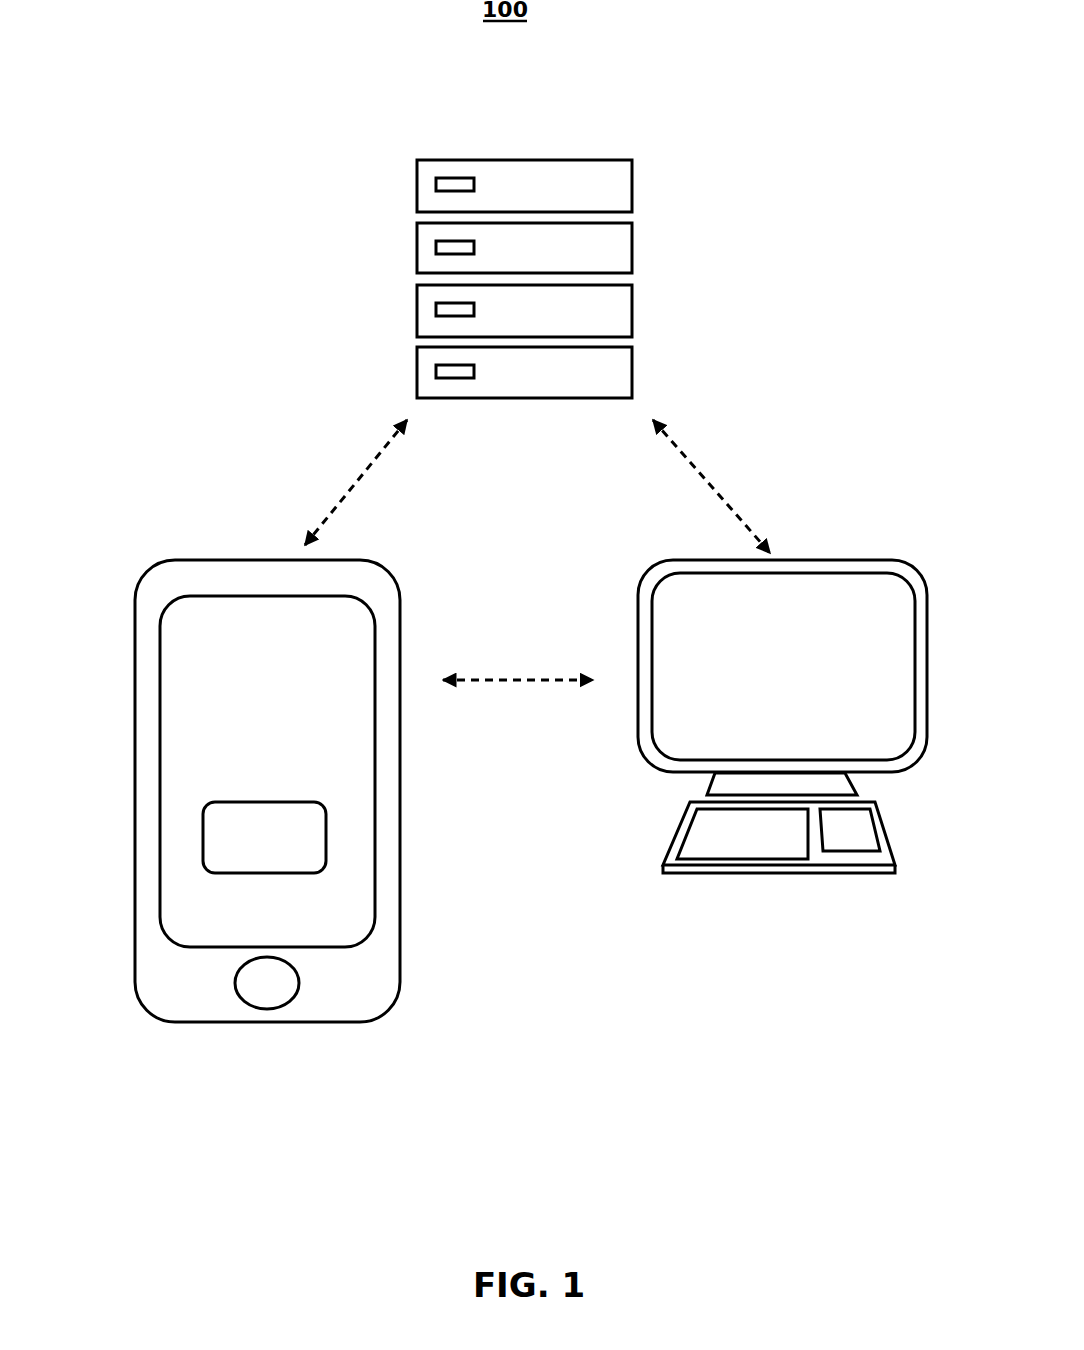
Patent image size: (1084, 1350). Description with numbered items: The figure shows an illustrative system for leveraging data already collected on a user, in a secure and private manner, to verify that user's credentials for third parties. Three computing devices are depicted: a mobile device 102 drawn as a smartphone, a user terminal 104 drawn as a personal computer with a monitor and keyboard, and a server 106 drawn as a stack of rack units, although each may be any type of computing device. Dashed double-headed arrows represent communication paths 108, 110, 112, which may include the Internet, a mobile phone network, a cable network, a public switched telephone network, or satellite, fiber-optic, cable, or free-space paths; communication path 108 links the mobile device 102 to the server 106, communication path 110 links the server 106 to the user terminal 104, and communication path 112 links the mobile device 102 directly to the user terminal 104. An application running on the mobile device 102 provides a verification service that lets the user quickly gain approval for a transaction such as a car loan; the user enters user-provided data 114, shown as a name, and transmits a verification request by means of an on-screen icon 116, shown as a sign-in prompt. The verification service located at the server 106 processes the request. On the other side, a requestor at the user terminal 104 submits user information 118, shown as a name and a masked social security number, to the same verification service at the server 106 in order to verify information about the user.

The mobile device 102 is at (190, 545).
The user terminal 104 is at (810, 555).
The server 106 is at (648, 155).
The communication path 108 is at (327, 452).
The communication path 110 is at (723, 438).
The communication path 112 is at (500, 662).
The user-provided data 114 is at (202, 668).
The on-screen icon 116 is at (217, 820).
The user information 118 is at (837, 615).